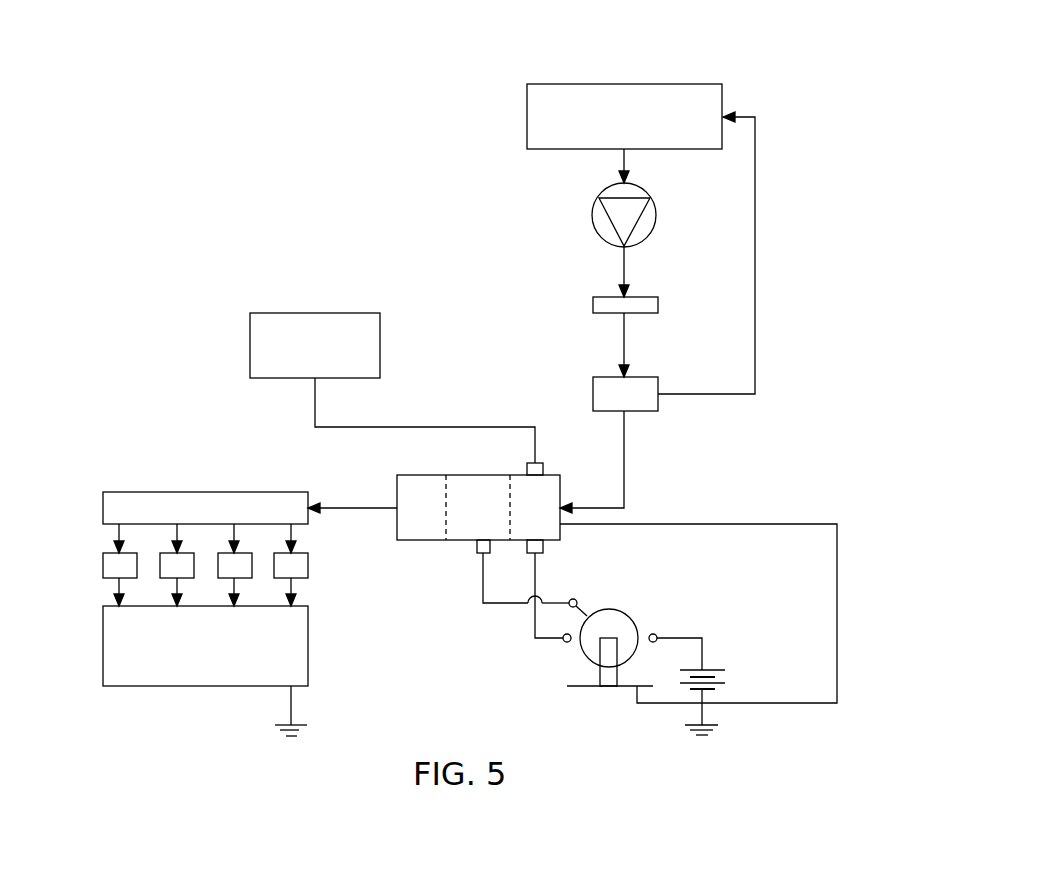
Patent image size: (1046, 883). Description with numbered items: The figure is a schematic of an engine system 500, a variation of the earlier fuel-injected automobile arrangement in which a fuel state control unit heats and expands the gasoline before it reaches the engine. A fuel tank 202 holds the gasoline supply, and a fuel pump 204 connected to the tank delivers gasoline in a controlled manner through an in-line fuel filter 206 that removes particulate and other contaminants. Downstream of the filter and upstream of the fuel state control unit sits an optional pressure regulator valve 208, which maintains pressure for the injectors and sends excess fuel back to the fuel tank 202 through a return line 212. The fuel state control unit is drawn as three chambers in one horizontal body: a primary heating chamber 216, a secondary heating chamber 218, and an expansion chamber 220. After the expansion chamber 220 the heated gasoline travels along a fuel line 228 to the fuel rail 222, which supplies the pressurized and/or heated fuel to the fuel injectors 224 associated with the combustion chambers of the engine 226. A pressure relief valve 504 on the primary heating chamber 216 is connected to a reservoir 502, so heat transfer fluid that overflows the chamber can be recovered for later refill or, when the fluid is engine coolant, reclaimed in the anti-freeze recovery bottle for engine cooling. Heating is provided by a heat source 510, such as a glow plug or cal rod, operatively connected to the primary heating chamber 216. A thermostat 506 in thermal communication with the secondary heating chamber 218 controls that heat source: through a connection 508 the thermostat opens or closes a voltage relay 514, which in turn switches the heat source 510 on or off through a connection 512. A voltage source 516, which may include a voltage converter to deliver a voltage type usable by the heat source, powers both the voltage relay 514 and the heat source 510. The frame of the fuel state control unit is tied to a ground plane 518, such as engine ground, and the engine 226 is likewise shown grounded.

The engine system 500 is at (193, 127).
The fuel tank 202 is at (698, 100).
The fuel pump 204 is at (592, 222).
The fuel filter 206 is at (602, 302).
The pressure regulator valve 208 is at (609, 445).
The return line 212 is at (757, 250).
The primary heating chamber 216 is at (676, 599).
The secondary heating chamber 218 is at (484, 507).
The expansion chamber 220 is at (478, 507).
The fuel rail 222 is at (160, 500).
The fuel injectors 224 is at (112, 563).
The engine 226 is at (128, 678).
The fuel line 228 is at (378, 513).
The reservoir 502 is at (392, 388).
The pressure relief valve 504 is at (540, 460).
The thermostat 506 is at (480, 547).
The connection 508 is at (512, 603).
The heat source 510 is at (537, 552).
The connection 512 is at (547, 642).
The voltage relay 514 is at (613, 613).
The voltage source 516 is at (728, 648).
The ground plane 518 is at (266, 737).